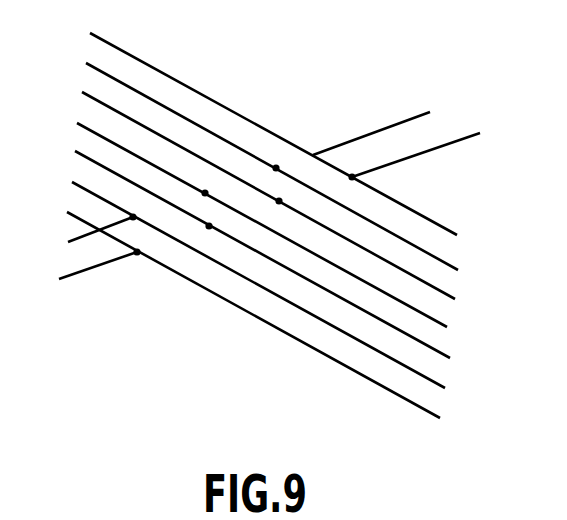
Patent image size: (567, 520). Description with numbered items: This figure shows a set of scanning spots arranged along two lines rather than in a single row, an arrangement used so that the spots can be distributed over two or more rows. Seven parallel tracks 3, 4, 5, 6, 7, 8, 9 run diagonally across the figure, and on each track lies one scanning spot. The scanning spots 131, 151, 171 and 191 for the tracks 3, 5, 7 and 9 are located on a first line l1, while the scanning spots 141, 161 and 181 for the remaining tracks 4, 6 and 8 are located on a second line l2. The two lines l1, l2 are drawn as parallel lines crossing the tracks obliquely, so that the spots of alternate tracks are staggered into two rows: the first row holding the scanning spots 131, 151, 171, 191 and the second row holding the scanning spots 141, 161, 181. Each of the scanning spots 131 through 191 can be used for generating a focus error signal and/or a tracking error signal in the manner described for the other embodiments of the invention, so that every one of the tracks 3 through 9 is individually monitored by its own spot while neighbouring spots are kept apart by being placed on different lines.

The track 3 is at (443, 420).
The track 4 is at (447, 390).
The track 5 is at (452, 360).
The track 6 is at (450, 329).
The track 7 is at (458, 301).
The track 8 is at (461, 272).
The track 9 is at (460, 238).
The scanning spot 131 is at (137, 255).
The scanning spot 141 is at (130, 217).
The scanning spot 151 is at (209, 229).
The scanning spot 161 is at (203, 193).
The scanning spot 171 is at (279, 204).
The scanning spot 181 is at (277, 165).
The scanning spot 191 is at (356, 177).
The first line l1 is at (481, 132).
The second line l2 is at (431, 111).